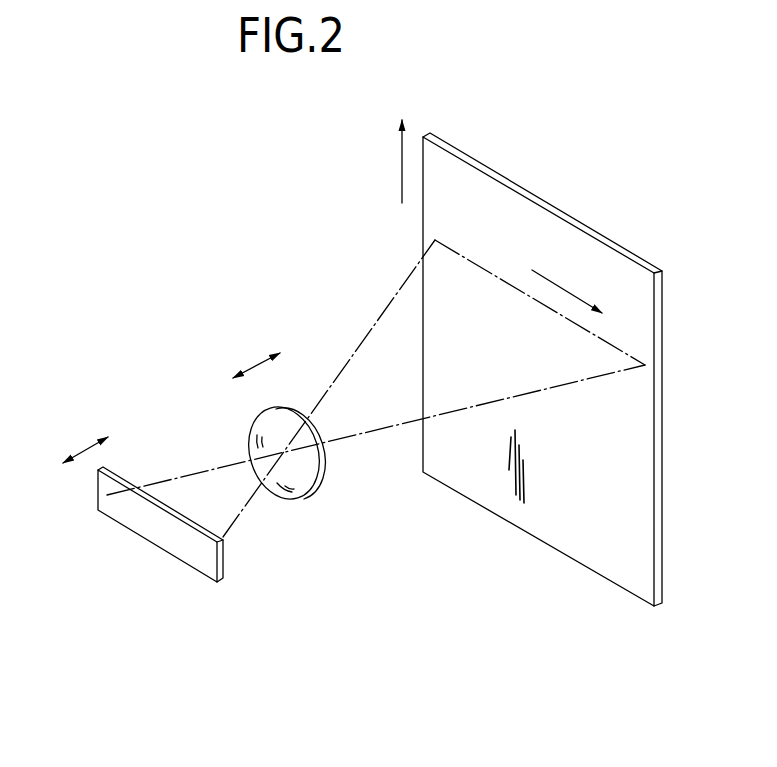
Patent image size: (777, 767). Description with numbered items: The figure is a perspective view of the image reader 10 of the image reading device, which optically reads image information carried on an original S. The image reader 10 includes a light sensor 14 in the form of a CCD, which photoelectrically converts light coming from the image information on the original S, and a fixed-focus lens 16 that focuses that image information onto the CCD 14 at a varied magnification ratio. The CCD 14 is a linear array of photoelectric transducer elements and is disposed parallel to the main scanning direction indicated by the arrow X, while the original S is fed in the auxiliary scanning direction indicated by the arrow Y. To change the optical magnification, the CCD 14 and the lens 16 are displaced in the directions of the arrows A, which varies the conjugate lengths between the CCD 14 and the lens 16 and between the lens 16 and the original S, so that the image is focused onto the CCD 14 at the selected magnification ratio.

The image reader 10 is at (302, 255).
The light sensor 14 is at (170, 537).
The fixed-focus lens 16 is at (302, 487).
The original S is at (645, 400).